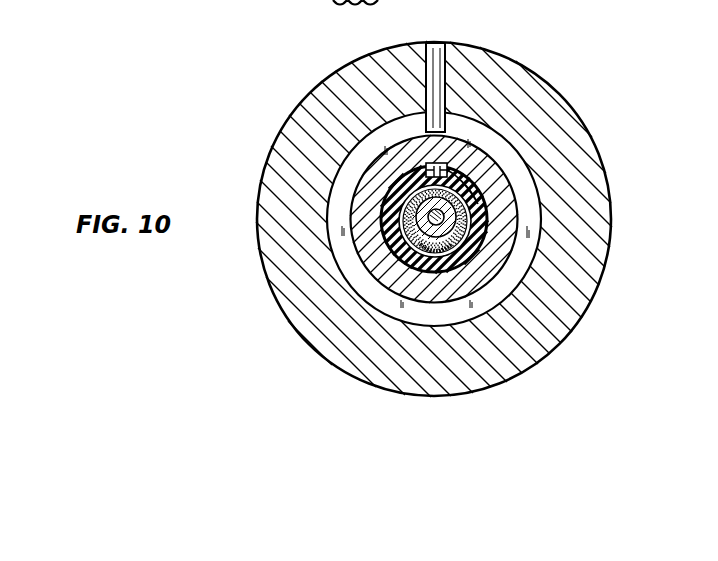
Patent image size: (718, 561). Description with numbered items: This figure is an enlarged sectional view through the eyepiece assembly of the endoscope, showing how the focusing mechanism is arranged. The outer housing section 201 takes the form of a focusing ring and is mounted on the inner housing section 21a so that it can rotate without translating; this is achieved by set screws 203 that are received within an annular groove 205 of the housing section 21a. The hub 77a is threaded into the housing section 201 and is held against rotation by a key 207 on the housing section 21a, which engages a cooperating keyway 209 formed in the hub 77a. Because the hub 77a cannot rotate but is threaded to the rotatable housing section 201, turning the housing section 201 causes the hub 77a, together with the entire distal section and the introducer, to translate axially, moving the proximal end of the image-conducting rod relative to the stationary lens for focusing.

The housing section 201 is at (513, 98).
The set screws 203 is at (442, 62).
The annular groove 205 is at (442, 167).
The key 207 is at (449, 164).
The keyway 209 is at (355, 167).
The housing section 21a is at (358, 215).
The hub 77a is at (470, 202).